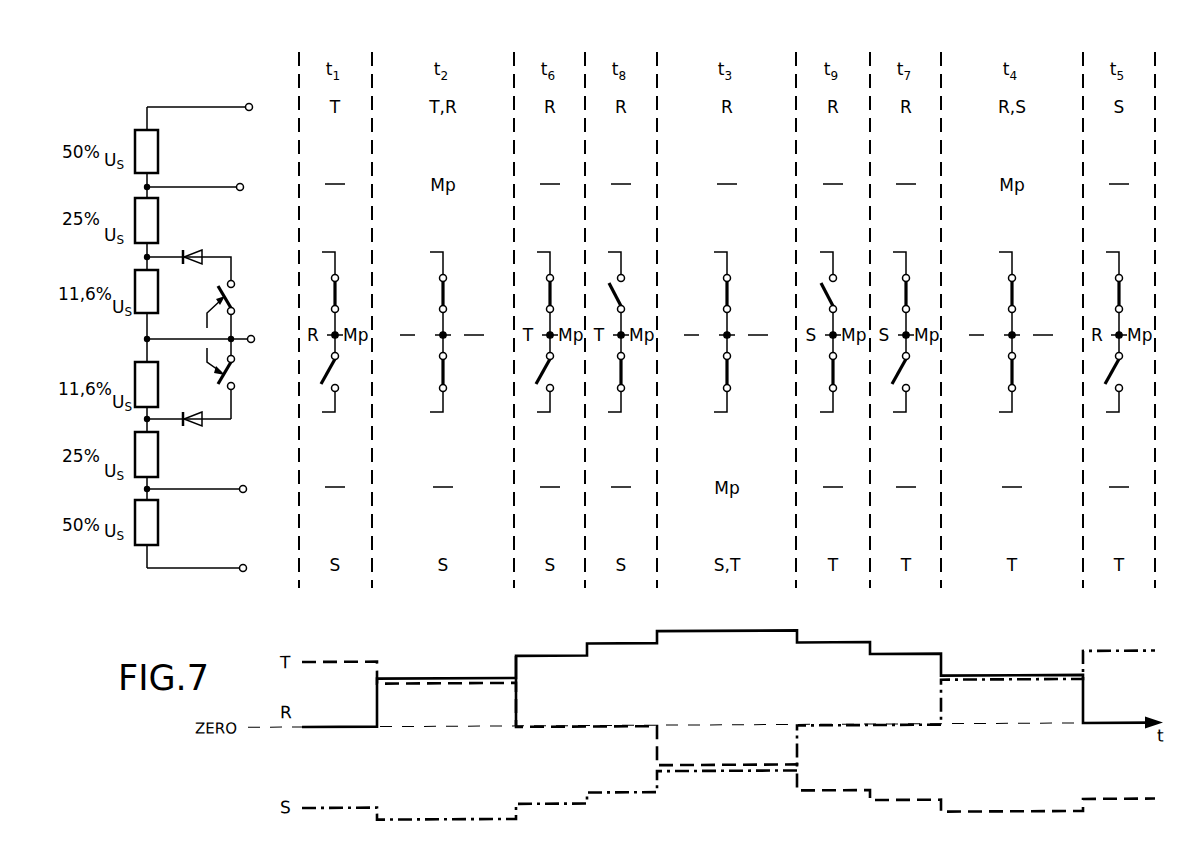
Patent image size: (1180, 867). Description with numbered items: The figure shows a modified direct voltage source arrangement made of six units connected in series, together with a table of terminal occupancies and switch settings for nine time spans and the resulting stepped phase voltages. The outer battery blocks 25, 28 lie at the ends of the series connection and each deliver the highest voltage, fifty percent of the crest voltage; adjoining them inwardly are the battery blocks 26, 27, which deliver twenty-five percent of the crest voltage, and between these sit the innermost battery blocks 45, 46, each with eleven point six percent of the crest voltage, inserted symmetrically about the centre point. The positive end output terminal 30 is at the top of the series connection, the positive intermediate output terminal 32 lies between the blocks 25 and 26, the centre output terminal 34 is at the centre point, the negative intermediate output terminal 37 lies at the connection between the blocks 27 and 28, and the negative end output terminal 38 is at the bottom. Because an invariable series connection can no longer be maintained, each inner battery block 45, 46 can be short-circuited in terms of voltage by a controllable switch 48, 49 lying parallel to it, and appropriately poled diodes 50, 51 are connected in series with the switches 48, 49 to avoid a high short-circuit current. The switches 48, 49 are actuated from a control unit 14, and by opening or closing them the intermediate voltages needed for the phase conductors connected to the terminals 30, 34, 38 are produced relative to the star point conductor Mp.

The control unit (signal source) 14 is at (191, 335).
The battery block 25 is at (157, 153).
The battery block 26 is at (157, 221).
The battery block 27 is at (157, 456).
The battery block 28 is at (157, 523).
The positive end output terminal 30 is at (251, 103).
The positive intermediate output terminal 32 is at (243, 183).
The centre output terminal 34 is at (255, 339).
The negative intermediate output terminal 37 is at (246, 485).
The negative end output terminal 38 is at (246, 564).
The battery block 45 is at (157, 292).
The battery block 46 is at (157, 386).
The controllable switch 48 is at (232, 300).
The controllable switch 49 is at (232, 377).
The diode 50 is at (200, 249).
The diode 51 is at (200, 427).